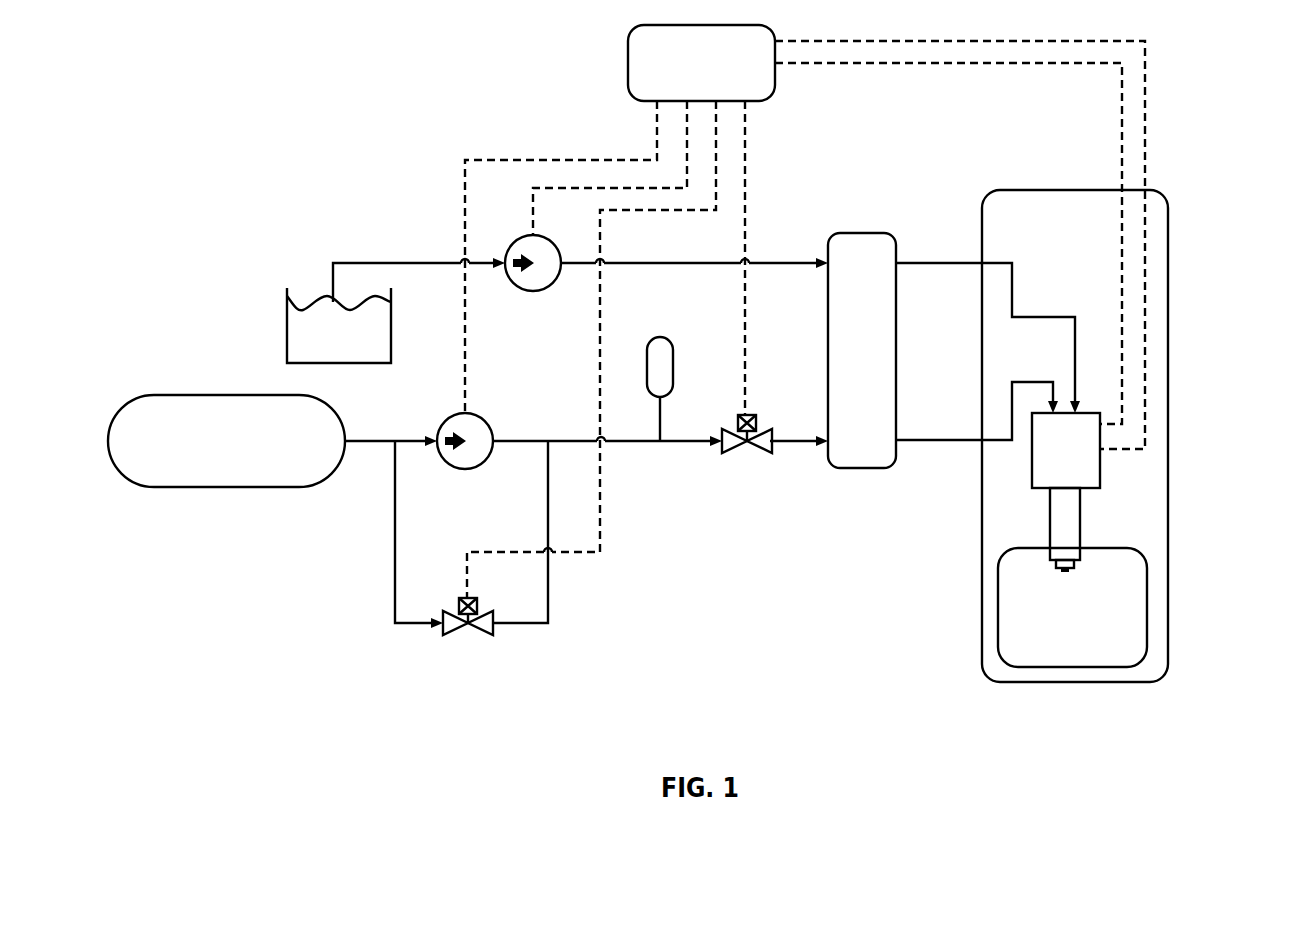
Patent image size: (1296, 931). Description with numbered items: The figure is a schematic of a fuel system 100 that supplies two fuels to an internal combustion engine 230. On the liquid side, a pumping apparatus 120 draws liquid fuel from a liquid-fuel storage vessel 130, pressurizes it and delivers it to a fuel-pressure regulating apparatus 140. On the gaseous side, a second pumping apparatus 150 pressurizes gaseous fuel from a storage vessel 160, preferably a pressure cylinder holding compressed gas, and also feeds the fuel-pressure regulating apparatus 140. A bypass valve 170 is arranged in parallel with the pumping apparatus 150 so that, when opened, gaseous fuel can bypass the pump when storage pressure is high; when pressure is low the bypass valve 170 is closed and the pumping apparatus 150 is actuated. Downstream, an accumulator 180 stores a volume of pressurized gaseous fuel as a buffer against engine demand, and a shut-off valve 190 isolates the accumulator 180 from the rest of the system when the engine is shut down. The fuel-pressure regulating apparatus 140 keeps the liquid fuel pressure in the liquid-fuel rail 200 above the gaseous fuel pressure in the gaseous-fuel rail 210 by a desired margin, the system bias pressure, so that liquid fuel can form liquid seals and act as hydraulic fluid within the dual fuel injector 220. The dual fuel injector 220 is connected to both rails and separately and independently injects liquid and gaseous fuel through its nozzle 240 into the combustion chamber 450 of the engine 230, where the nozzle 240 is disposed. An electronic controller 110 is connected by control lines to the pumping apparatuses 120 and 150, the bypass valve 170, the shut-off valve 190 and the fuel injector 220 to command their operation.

The fuel system 100 is at (318, 104).
The electronic controller 110 is at (724, 77).
The pumping apparatus 120 is at (533, 292).
The liquid-fuel storage vessel 130 is at (315, 341).
The fuel-pressure regulating apparatus 140 is at (838, 366).
The pumping apparatus 150 is at (465, 470).
The storage vessel 160 is at (202, 456).
The bypass valve 170 is at (460, 634).
The accumulator 180 is at (672, 334).
The shut-off valve 190 is at (747, 454).
The liquid-fuel rail 200 is at (935, 262).
The gaseous-fuel rail 210 is at (960, 439).
The dual fuel injector 220 is at (1066, 450).
The internal combustion engine 230 is at (1169, 439).
The nozzle 240 is at (1075, 567).
The combustion chamber 450 is at (1048, 653).